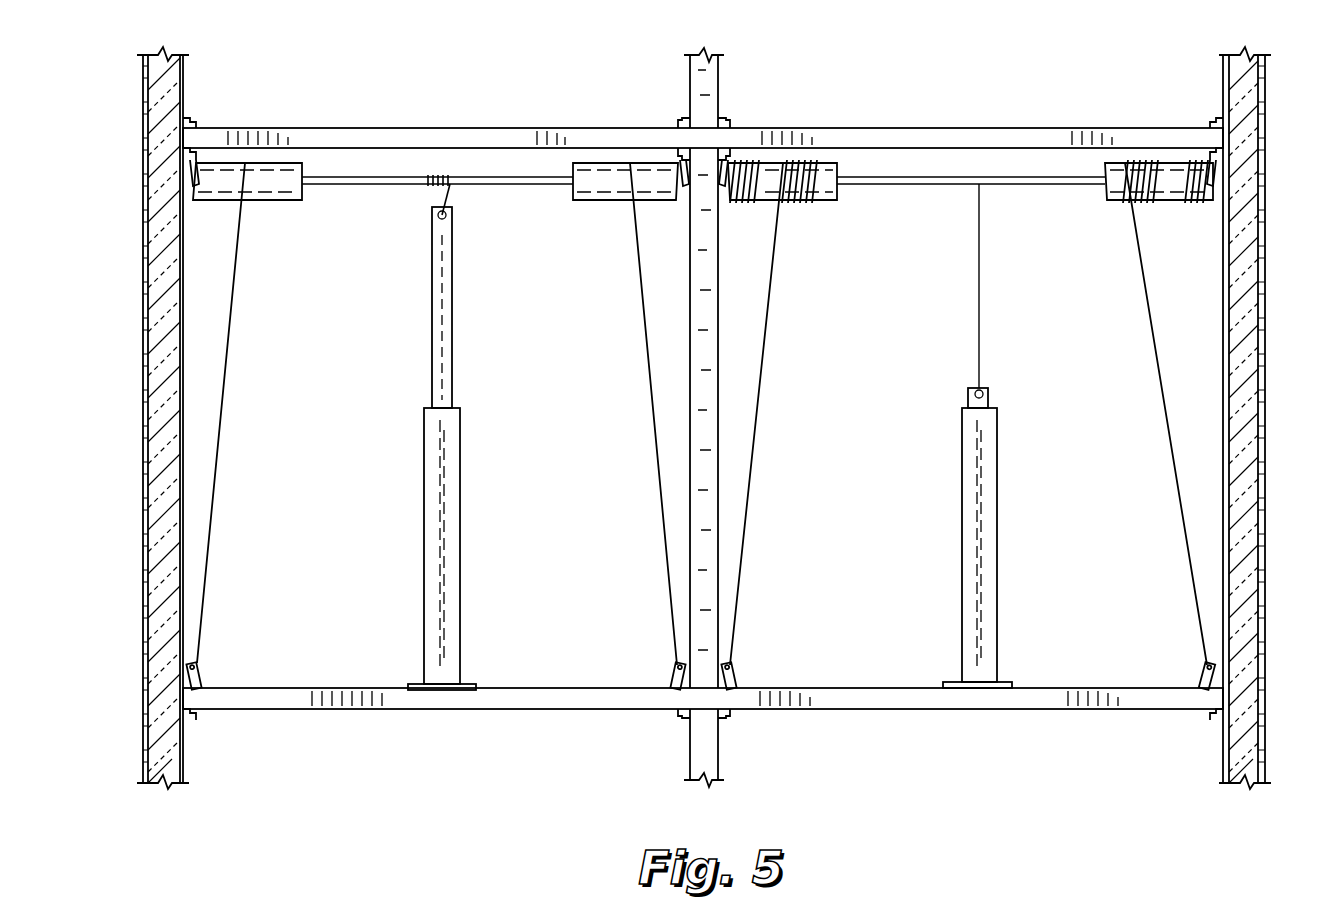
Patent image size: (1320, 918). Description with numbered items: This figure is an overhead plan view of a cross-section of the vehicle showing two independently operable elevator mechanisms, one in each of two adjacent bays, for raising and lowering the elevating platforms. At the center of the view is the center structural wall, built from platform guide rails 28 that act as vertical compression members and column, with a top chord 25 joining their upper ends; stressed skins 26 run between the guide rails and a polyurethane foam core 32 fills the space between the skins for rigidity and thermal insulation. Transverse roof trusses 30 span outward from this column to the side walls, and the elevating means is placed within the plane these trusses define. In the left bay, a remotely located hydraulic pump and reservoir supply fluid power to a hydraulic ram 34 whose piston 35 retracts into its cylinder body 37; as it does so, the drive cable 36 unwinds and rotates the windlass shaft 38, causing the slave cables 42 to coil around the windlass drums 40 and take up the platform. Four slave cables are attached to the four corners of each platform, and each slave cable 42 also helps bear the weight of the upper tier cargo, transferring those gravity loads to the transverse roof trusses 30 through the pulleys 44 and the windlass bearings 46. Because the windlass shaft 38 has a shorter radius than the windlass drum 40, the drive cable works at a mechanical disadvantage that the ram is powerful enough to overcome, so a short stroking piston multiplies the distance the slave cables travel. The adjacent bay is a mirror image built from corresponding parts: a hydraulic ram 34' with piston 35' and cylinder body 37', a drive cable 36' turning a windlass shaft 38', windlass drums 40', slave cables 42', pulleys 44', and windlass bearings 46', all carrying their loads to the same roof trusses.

The top chord 25 is at (712, 80).
The stressed skins 26 is at (160, 700).
The platform guide rails 28 is at (688, 716).
The transverse roof trusses 30 is at (905, 135).
The polyurethane foam core 32 is at (163, 57).
The hydraulic ram 34 is at (423, 448).
The piston 35 is at (468, 307).
The drive cable 36 is at (467, 217).
The cylinder body 37 is at (461, 549).
The windlass shaft 38 is at (435, 210).
The windlass drums 40 is at (435, 220).
The slave cables 42 is at (437, 414).
The pulleys 44 is at (435, 653).
The windlass bearings 46 is at (394, 202).
The hydraulic ram 34' is at (964, 515).
The piston 35' is at (1008, 375).
The drive cable 36' is at (1013, 286).
The cylinder body 37' is at (1000, 548).
The windlass shaft 38' is at (971, 226).
The windlass drums 40' is at (970, 217).
The slave cables 42' is at (968, 414).
The pulleys 44' is at (968, 653).
The windlass bearings 46' is at (1013, 199).